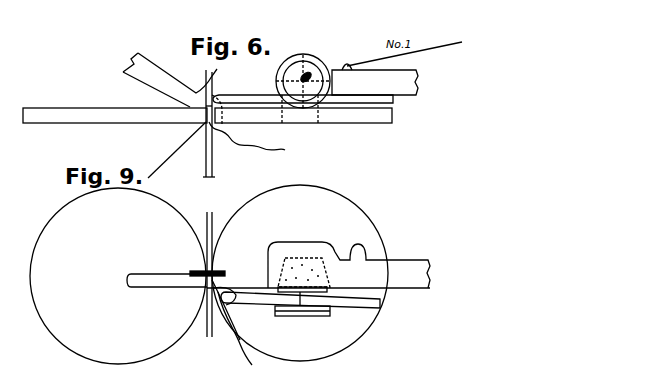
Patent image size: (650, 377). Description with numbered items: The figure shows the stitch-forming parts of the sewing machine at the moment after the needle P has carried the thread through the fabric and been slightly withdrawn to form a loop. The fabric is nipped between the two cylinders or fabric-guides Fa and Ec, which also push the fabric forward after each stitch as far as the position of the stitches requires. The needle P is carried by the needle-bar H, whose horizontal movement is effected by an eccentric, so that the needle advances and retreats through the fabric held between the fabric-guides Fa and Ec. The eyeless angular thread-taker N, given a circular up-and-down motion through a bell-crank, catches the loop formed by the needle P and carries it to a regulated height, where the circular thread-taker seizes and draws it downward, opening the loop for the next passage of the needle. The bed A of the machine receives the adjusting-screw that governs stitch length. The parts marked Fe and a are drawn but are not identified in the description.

In FIG. 6, the fabric-guide Fa is at (115, 115).
In FIG. 9, the fabric-guide Fa is at (118, 276).
In FIG. 6, the angular thread-taker N is at (170, 80).
In FIG. 9, the angular thread-taker N is at (176, 277).
In FIG. 6, the needle P is at (212, 123).
In FIG. 9, the needle P is at (219, 276).
In FIG. 6, the bed A is at (303, 88).
In FIG. 9, the bed A is at (453, 242).
In FIG. 6, the needle-bar H is at (375, 79).
In FIG. 9, the needle-bar H is at (318, 265).
In FIG. 6, the feed bar Fe is at (303, 97).
In FIG. 9, the feed bar Fe is at (300, 298).
In FIG. 6, the fabric-guide Ec is at (300, 129).
In FIG. 9, the fabric-guide Ec is at (300, 275).
In FIG. 9, the foot bracket a is at (302, 304).